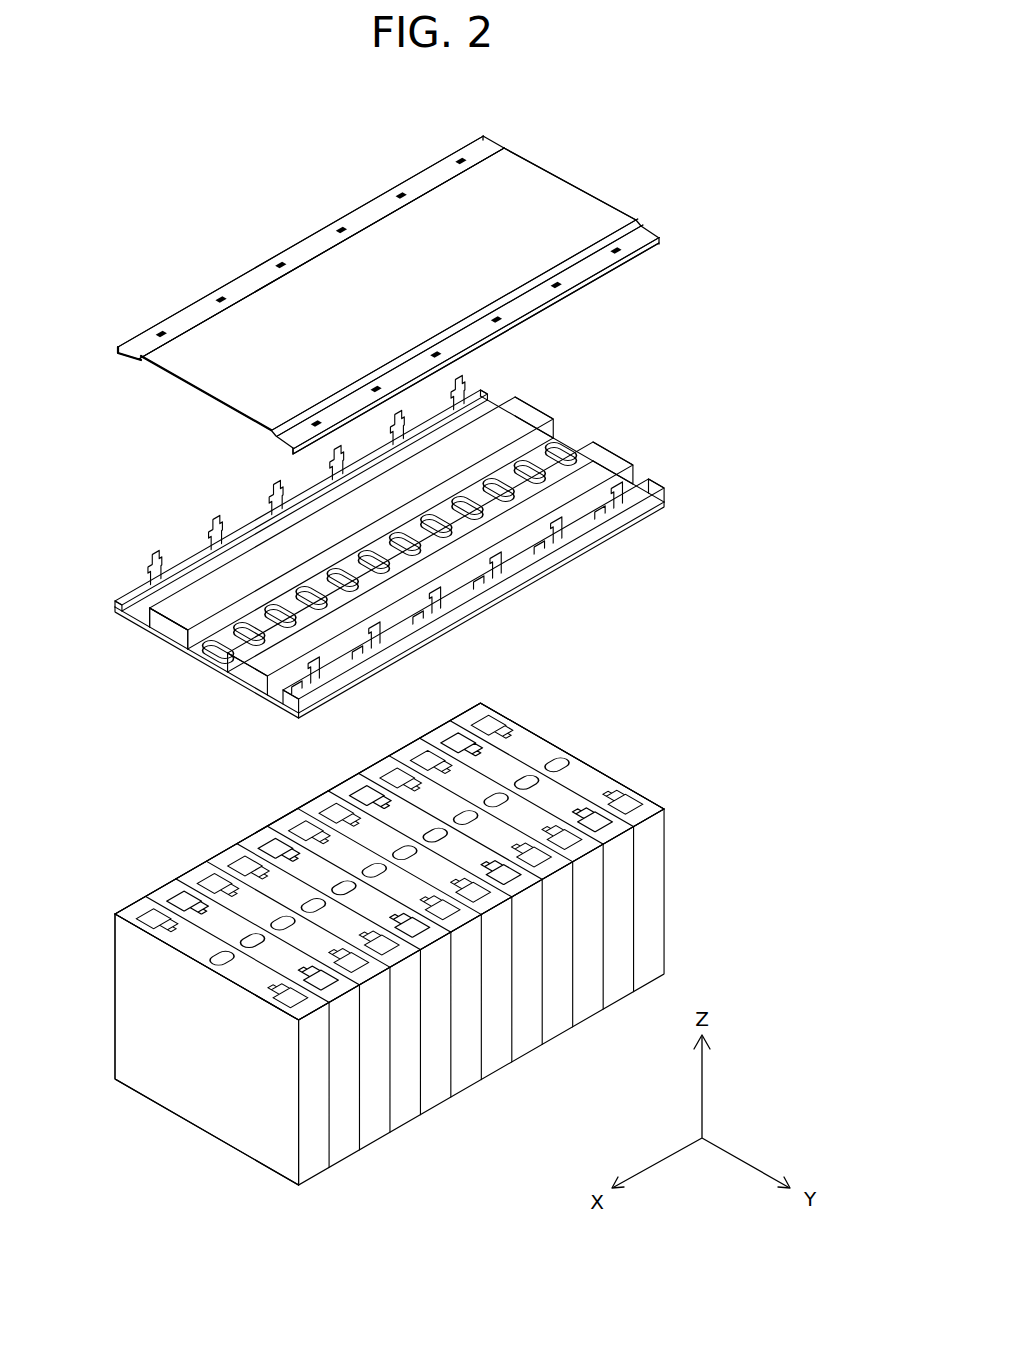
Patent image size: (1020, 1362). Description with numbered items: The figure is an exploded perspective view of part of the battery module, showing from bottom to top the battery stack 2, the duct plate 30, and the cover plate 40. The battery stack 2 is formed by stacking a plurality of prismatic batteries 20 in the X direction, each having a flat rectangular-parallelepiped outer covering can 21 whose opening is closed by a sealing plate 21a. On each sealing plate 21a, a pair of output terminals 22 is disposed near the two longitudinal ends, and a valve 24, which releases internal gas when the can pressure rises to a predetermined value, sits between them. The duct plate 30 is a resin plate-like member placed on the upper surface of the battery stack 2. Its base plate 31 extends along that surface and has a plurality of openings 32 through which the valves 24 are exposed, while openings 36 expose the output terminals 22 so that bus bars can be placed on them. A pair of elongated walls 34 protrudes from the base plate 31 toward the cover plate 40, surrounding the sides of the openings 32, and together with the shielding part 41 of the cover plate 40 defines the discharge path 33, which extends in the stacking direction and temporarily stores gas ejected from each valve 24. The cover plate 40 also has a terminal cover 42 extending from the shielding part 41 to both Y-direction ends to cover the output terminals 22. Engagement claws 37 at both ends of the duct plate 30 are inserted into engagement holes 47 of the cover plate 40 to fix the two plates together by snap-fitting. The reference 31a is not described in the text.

The battery stack 2 is at (596, 753).
The battery 20 is at (121, 906).
The outer covering can 21 is at (186, 1105).
The sealing plate 21a is at (149, 902).
The output terminal 22 is at (141, 930).
The valve 24 is at (213, 959).
The duct plate 30 is at (140, 560).
The base plate 31 is at (207, 667).
The groove 31a is at (185, 655).
The opening 32 is at (242, 613).
The discharge path 33 is at (315, 577).
The wall 34 is at (158, 622).
The opening 36 is at (293, 708).
The engagement claw 37 is at (505, 560).
The cover plate 40 is at (247, 257).
The shielding part 41 is at (330, 283).
The terminal cover 42 is at (182, 320).
The engagement hole 47 is at (500, 318).